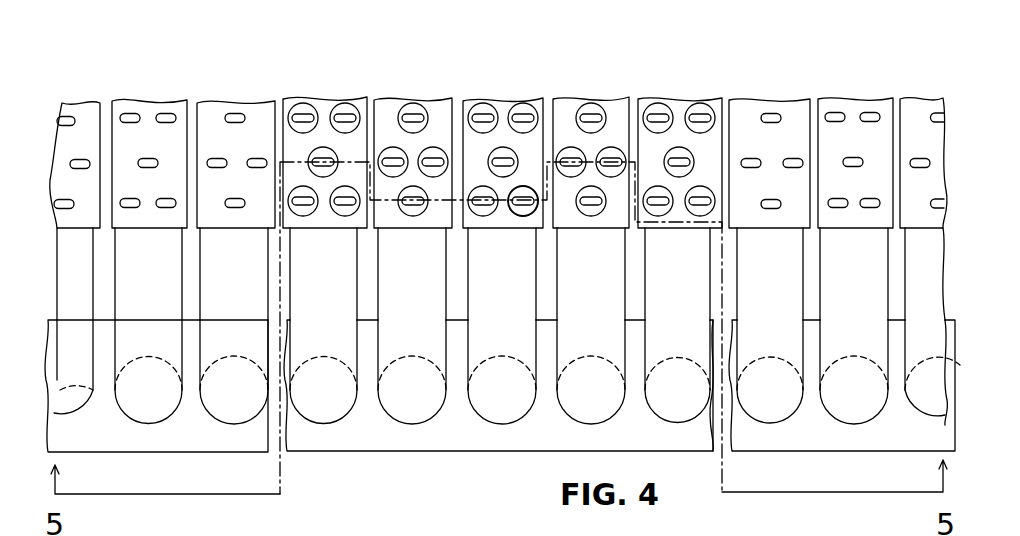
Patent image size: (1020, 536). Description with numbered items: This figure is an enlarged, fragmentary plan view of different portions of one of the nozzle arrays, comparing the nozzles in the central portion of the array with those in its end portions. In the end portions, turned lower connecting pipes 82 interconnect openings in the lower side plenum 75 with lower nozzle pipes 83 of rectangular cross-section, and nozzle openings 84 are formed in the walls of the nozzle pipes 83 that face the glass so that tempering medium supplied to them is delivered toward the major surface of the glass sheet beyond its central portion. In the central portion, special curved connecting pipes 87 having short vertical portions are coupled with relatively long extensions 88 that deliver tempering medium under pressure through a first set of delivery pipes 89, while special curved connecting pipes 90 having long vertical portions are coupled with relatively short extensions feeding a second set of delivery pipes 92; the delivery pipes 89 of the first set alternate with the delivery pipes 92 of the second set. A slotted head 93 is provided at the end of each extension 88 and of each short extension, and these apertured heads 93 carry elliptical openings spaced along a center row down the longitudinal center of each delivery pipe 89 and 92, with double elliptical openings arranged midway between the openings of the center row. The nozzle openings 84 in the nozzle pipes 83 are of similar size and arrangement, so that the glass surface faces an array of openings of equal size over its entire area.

The lower side plenum 75 is at (408, 452).
The lower connecting pipe 82 is at (213, 420).
The lower nozzle pipe 83 is at (218, 100).
The nozzle opening 84 is at (152, 135).
The special curved connecting pipe 87 is at (338, 418).
The relatively long extension 88 is at (503, 102).
The delivery pipe of first set 89 is at (300, 97).
The special curved connecting pipe 90 is at (428, 418).
The delivery pipe of second set 92 is at (388, 97).
The slotted head 93 is at (617, 148).